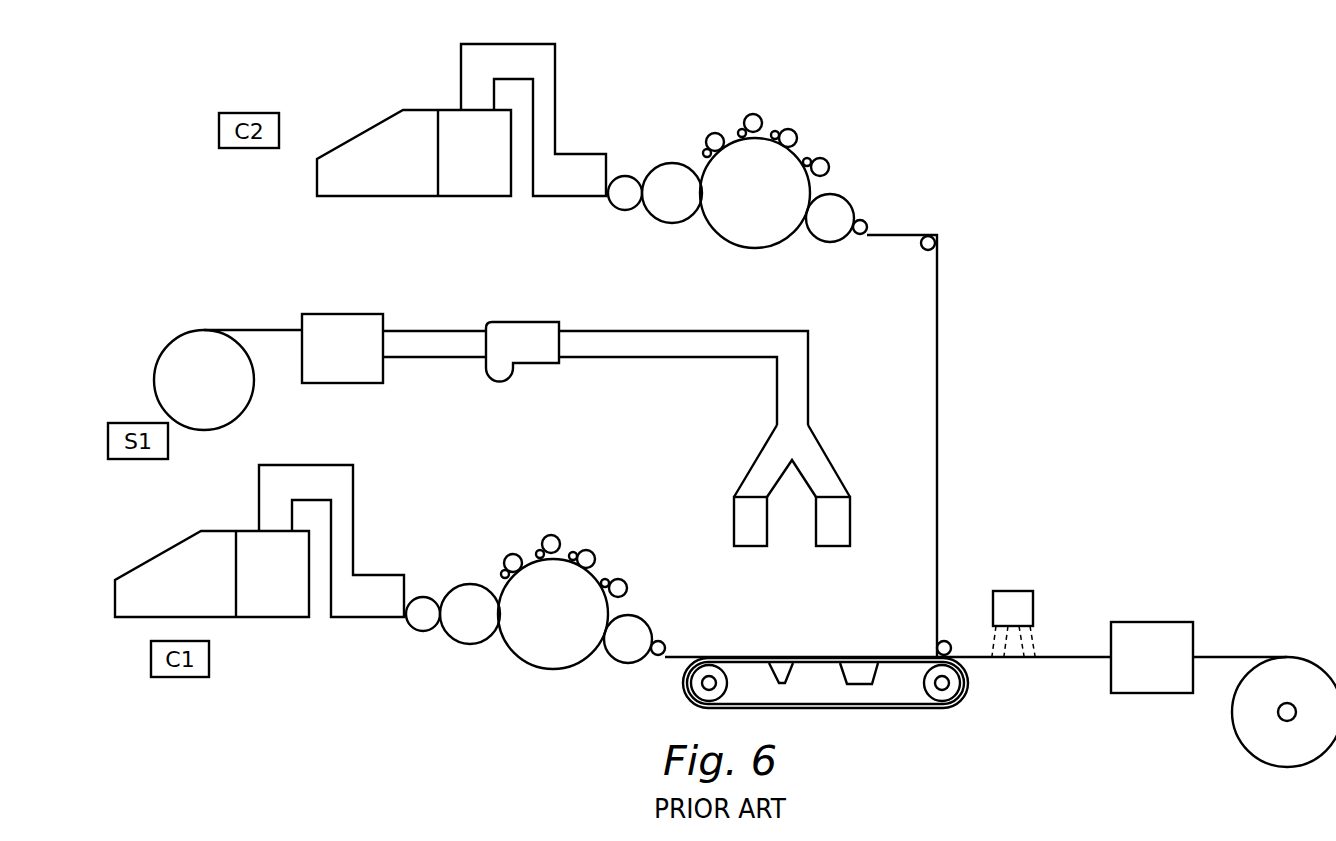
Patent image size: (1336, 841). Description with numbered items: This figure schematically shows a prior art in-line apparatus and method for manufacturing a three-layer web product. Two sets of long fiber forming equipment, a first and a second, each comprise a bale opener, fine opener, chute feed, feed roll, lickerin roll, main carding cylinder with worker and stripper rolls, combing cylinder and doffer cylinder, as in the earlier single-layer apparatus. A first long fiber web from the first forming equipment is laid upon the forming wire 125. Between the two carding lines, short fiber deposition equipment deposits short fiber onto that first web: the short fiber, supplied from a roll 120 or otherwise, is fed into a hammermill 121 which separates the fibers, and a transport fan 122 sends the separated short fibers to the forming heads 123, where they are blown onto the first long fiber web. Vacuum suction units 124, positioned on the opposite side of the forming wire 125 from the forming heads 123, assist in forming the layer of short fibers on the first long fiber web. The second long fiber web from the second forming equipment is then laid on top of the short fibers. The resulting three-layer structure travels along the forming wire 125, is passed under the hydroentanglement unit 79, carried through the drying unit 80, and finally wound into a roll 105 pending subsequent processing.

The hydroentanglement unit 79 is at (1033, 607).
The drying unit 80 is at (1155, 622).
The roll 105 is at (1237, 730).
The supply roll 120 is at (163, 353).
The hammermill 121 is at (338, 314).
The transport fan 122 is at (530, 365).
The forming heads 123 is at (733, 523).
The vacuum suction units 124 is at (787, 662).
The forming wire 125 is at (825, 708).